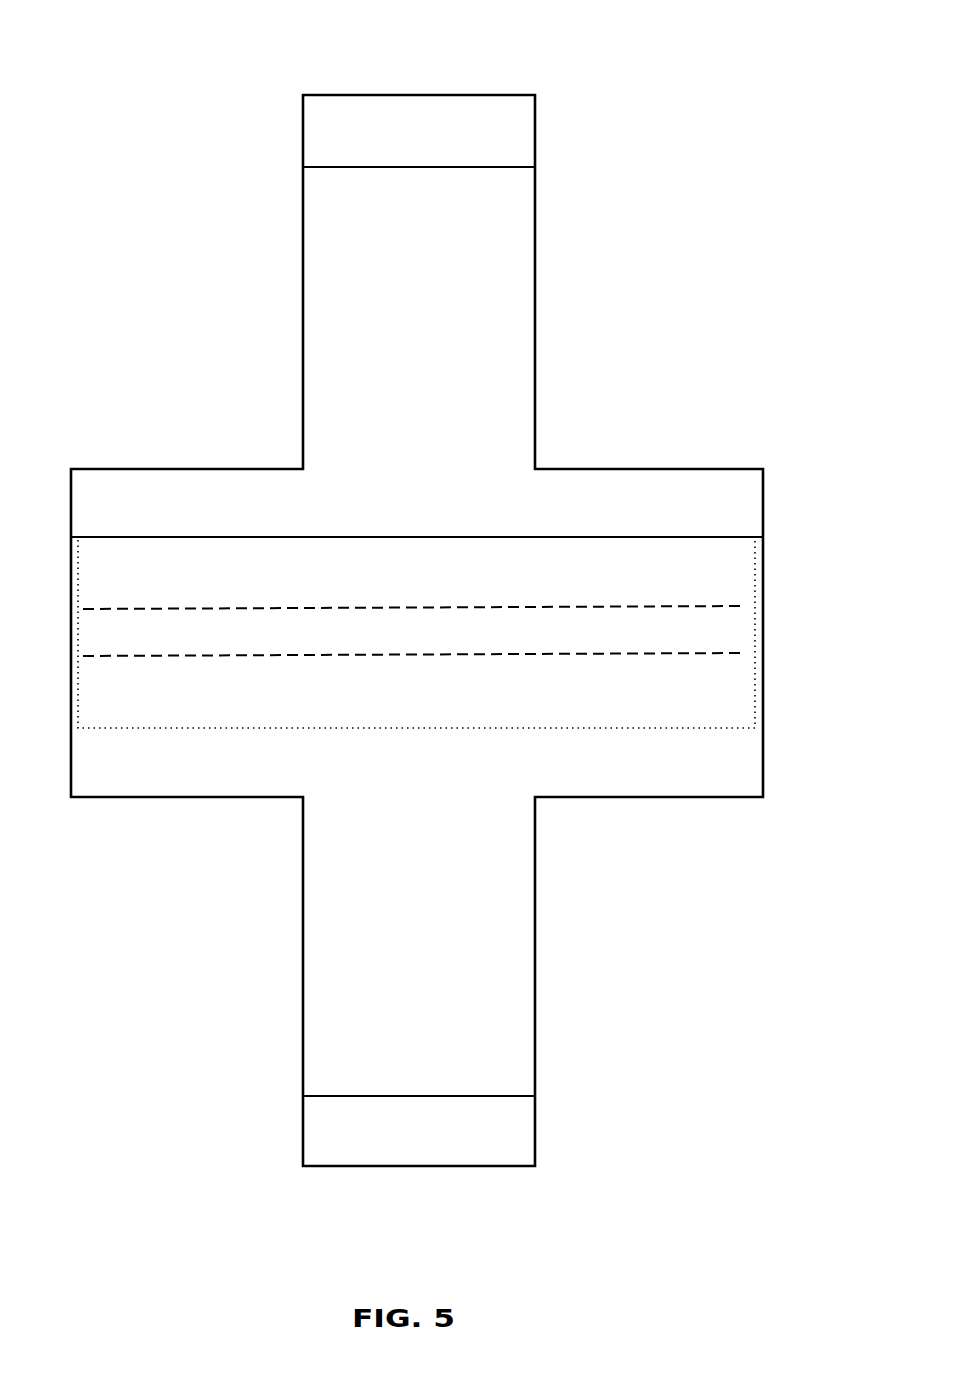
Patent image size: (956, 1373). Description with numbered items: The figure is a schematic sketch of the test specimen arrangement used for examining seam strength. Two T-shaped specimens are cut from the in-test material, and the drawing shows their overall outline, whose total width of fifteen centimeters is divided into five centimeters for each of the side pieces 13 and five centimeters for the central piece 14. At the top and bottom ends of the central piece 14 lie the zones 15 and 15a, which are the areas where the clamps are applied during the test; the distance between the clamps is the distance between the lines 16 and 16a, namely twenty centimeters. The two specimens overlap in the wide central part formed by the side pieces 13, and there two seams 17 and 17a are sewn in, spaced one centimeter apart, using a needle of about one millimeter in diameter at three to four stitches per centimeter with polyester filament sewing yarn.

The side pieces 13 is at (130, 470).
The central piece 14 is at (455, 210).
The clamp zone 15 is at (513, 132).
The clamp distance line 16 is at (522, 170).
The seam 17 is at (735, 607).
The seam 17a is at (730, 653).
The clamp distance line 16a is at (528, 1095).
The clamp zone 15a is at (499, 1135).